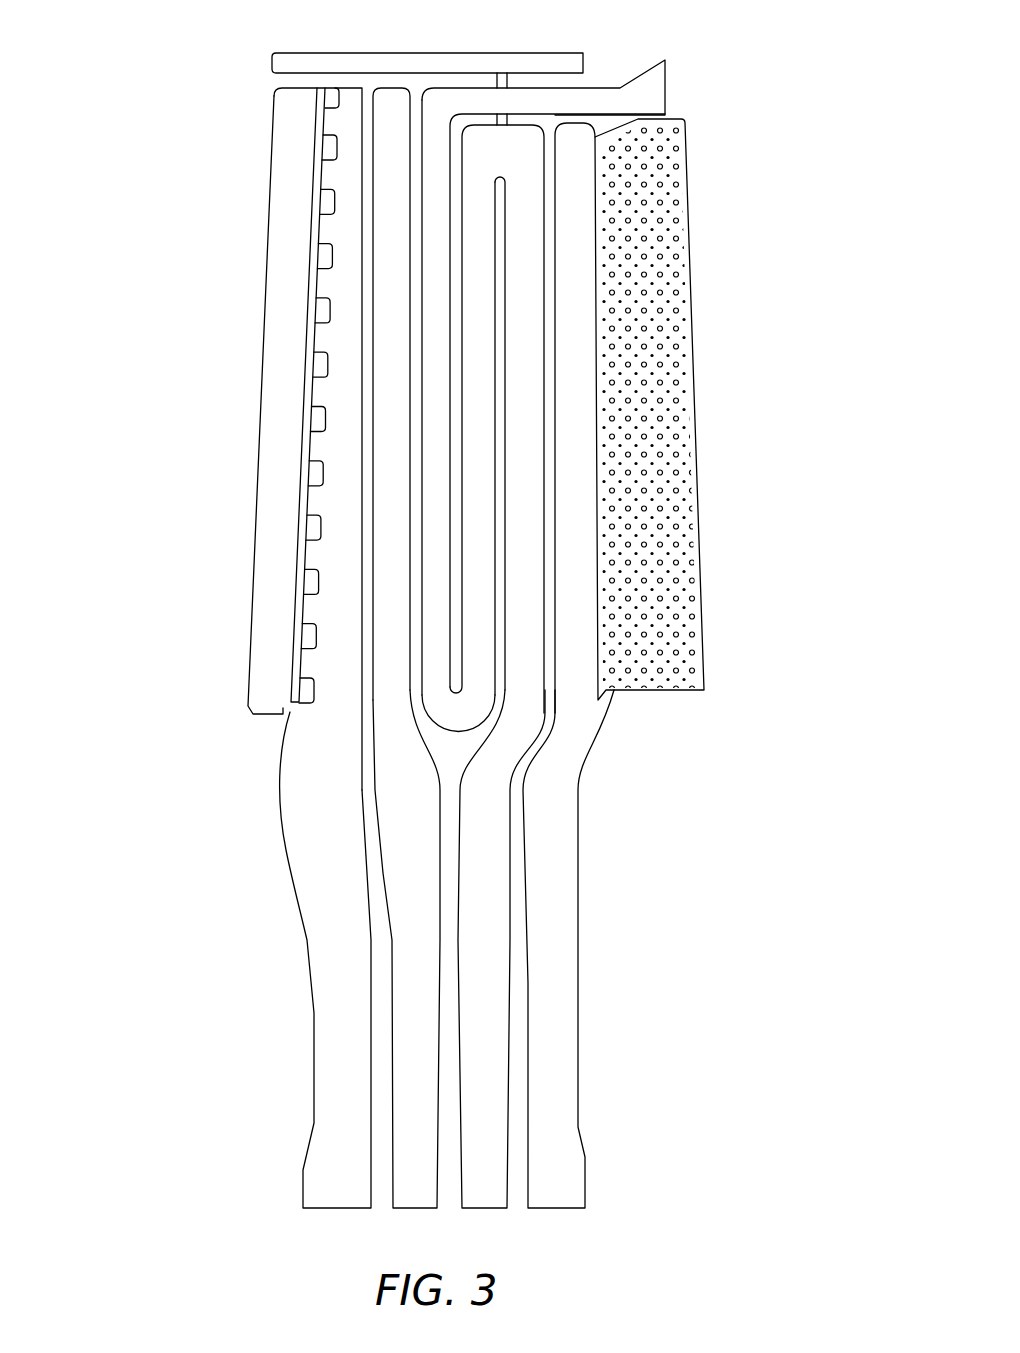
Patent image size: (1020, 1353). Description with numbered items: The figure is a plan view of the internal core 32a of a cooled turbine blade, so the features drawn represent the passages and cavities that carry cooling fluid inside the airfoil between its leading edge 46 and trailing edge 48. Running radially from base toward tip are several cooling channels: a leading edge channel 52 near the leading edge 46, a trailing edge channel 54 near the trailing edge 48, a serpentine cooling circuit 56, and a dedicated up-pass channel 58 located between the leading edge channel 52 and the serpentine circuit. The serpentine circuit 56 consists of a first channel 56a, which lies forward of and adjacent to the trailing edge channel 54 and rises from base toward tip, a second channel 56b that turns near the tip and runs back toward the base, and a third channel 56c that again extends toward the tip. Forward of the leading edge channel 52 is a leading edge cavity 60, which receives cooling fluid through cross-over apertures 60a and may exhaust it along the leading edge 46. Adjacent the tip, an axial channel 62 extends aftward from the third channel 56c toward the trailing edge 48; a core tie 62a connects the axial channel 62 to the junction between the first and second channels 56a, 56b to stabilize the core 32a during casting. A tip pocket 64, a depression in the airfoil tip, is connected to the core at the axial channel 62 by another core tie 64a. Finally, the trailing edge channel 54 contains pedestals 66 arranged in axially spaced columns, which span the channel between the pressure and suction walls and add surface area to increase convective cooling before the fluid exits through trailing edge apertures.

The internal core 32a is at (153, 103).
The leading edge 46 is at (258, 578).
The trailing edge 48 is at (700, 470).
The leading edge channel 52 is at (345, 228).
The trailing edge channel 54 is at (578, 576).
The serpentine cooling circuit 56 is at (535, 251).
The first channel 56a is at (530, 525).
The second channel 56b is at (477, 433).
The third channel 56c is at (435, 183).
The dedicated up-pass channel 58 is at (388, 137).
The leading edge cavity 60 is at (268, 375).
The cross-over apertures 60a is at (317, 365).
The axial channel 62 is at (592, 90).
The core tie 62a is at (509, 119).
The tip pocket 64 is at (480, 52).
The core tie 64a is at (510, 85).
The trailing edge pedestals 66 is at (608, 352).